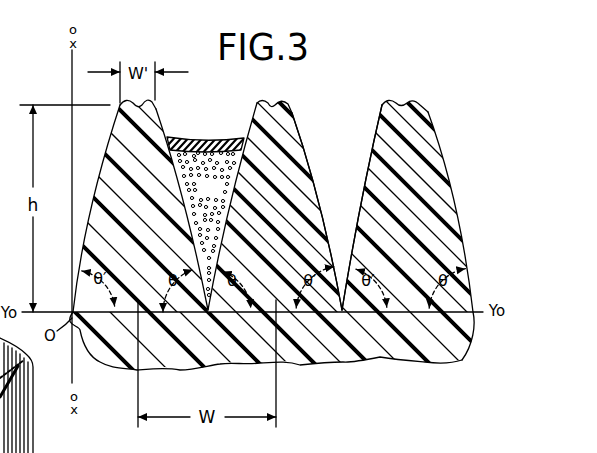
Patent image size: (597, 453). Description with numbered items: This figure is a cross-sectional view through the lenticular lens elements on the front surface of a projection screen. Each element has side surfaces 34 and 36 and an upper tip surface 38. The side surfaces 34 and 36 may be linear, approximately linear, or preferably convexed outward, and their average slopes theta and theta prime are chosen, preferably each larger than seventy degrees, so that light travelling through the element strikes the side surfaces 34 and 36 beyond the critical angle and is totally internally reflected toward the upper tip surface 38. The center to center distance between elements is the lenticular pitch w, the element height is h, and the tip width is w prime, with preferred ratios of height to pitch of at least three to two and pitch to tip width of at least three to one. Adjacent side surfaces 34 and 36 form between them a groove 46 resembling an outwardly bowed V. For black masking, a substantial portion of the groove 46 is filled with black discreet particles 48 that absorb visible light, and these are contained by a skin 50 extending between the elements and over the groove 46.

The side surface 34 is at (194, 232).
The side surface 36 is at (100, 171).
The upper tip surface 38 is at (143, 105).
The groove 46 is at (326, 182).
The black discreet particles 48 is at (195, 196).
The skin 50 is at (222, 138).